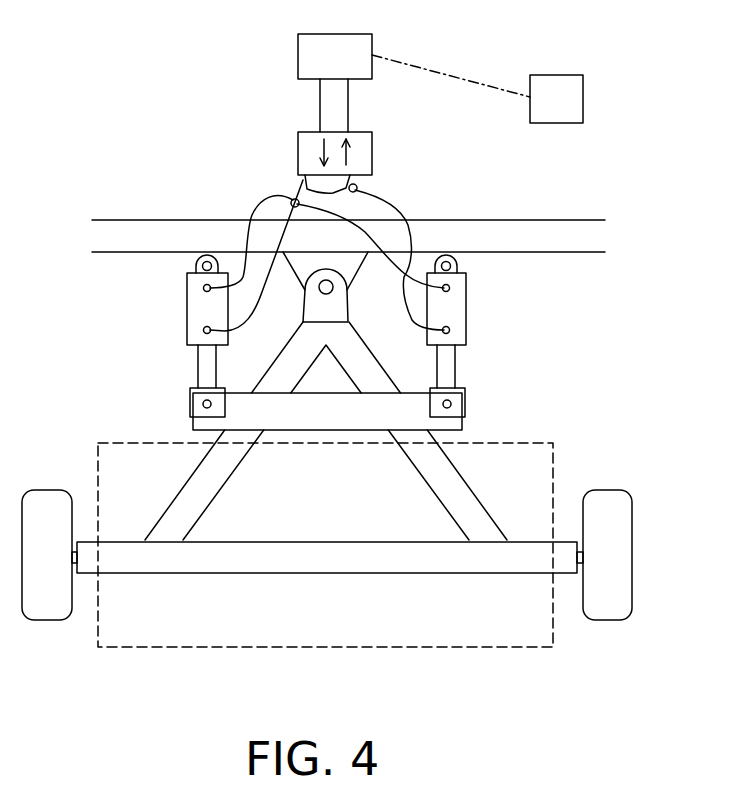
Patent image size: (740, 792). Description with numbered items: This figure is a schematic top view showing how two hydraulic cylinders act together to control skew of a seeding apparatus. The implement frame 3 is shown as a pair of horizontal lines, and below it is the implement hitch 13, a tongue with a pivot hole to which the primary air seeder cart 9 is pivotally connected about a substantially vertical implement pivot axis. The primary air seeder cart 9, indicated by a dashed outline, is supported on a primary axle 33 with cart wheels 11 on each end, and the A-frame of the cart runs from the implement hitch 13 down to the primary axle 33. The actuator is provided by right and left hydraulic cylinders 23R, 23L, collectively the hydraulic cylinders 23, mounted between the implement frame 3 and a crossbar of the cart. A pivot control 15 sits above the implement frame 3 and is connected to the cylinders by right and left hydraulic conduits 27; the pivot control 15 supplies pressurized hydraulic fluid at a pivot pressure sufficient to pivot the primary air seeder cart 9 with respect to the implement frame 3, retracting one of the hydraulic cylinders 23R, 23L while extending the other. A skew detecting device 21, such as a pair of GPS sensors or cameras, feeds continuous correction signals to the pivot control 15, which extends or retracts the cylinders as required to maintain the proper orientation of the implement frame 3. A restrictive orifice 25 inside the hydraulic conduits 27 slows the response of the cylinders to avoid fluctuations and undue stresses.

The implement frame 3 is at (552, 220).
The primary air seeder cart 9 is at (98, 647).
The cart wheels 11 is at (632, 533).
The implement hitch 13 is at (360, 273).
The pivot control 15 is at (372, 43).
The skew detecting device 21 is at (583, 97).
The hydraulic cylinders 23 is at (133, 336).
The left hydraulic cylinder 23L is at (187, 311).
The right hydraulic cylinder 23R is at (466, 296).
The restrictive orifice 25 is at (466, 331).
The hydraulic conduits 27 is at (271, 200).
The primary axle 33 is at (460, 574).